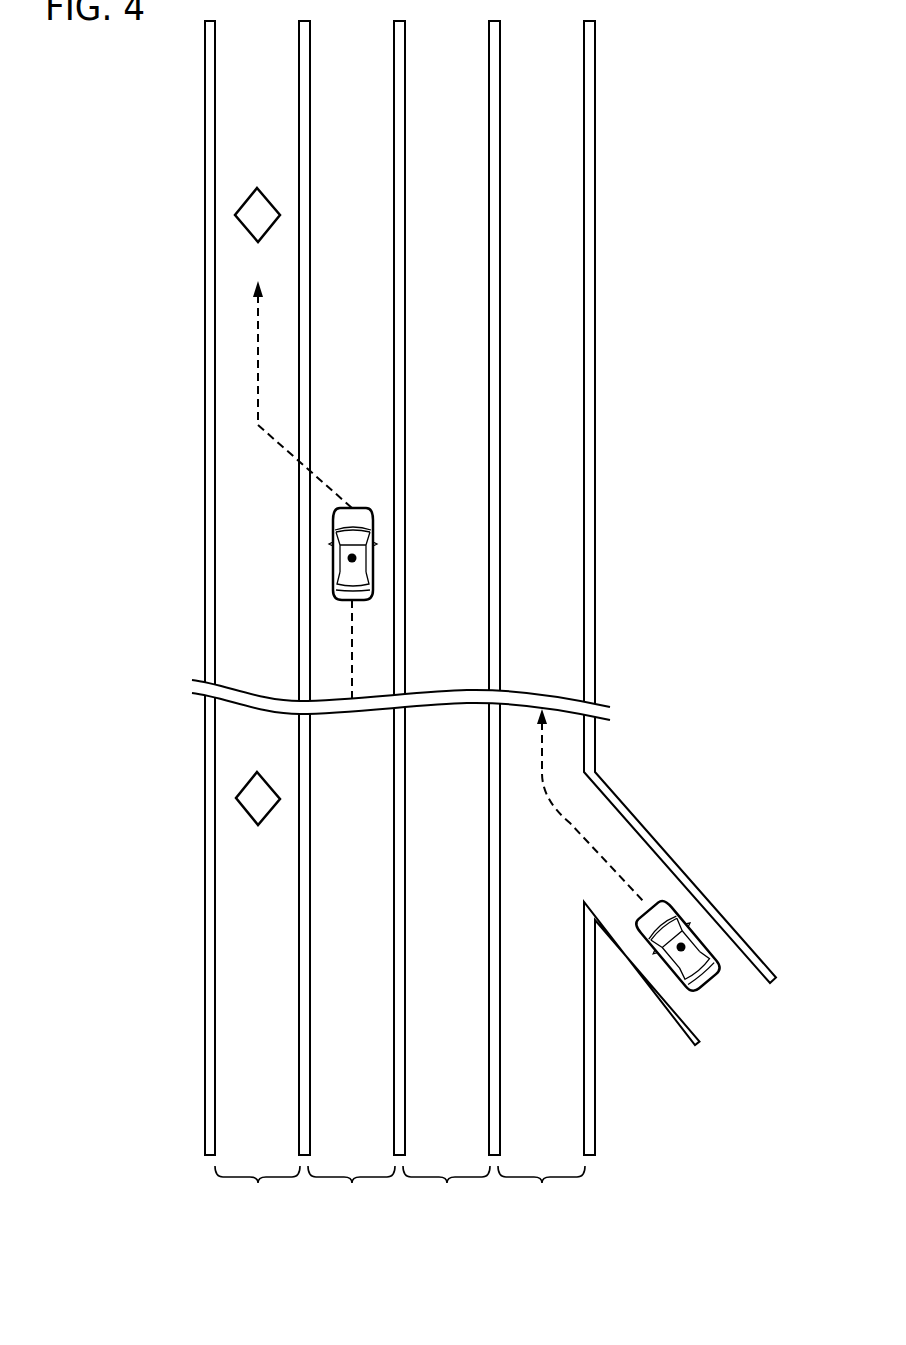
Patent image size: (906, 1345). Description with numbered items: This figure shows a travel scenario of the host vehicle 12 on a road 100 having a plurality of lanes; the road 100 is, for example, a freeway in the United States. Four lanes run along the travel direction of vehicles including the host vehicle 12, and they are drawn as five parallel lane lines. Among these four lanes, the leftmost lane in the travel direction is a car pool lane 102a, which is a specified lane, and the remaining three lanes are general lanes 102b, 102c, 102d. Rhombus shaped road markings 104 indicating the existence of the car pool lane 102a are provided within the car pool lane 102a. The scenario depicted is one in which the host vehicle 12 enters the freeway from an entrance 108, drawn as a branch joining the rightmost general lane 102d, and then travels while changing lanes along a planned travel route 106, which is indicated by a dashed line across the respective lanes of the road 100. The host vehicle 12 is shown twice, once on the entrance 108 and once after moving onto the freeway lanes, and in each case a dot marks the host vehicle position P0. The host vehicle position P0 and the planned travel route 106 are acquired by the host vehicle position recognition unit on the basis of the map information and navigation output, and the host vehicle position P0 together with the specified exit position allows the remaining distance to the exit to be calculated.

The road 100 is at (484, 644).
The car pool lane 102a is at (257, 1191).
The general lane 102b is at (351, 1191).
The general lane 102c is at (446, 1191).
The general lane 102d is at (541, 1191).
The rhombus shaped road markings 104 is at (246, 203).
The planned travel route 106 is at (352, 644).
The entrance 108 is at (620, 798).
The host vehicle 12 is at (333, 556).
The host vehicle position P0 is at (358, 557).